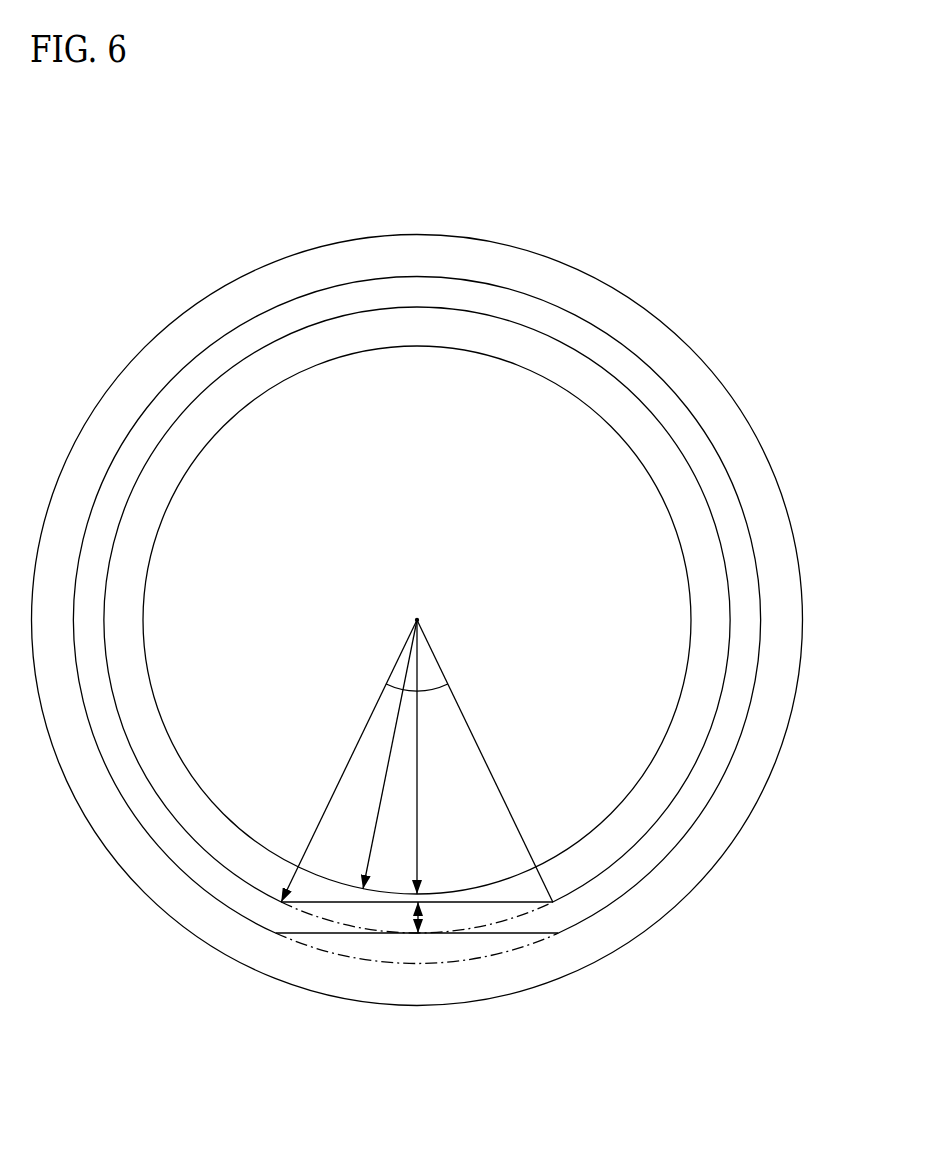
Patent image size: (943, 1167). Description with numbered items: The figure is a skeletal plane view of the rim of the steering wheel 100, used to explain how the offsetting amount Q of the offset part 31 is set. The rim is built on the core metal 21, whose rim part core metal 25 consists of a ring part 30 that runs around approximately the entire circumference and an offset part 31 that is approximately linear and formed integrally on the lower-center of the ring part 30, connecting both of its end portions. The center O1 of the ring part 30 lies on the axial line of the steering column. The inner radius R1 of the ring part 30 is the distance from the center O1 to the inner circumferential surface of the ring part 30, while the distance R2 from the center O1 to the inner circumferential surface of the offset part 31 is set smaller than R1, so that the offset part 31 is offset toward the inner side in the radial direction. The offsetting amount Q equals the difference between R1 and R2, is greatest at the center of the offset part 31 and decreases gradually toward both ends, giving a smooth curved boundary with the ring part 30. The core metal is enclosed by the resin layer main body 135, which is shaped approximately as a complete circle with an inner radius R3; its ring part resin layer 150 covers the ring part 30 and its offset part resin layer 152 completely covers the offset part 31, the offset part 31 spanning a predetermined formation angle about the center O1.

The steering wheel 100 is at (707, 265).
The resin layer main body 135 is at (685, 363).
The ring part resin layer 150 is at (430, 428).
The offset part resin layer 152 is at (417, 844).
The rim part core metal 25 is at (552, 298).
The core metal 21 is at (416, 581).
The ring part 30 is at (162, 828).
The offset part 31 is at (463, 920).
The center of the ring part O1 is at (417, 620).
The inner radius of the ring part R1 is at (340, 782).
The inner radius of the offset part R2 is at (420, 795).
The inner radius of the resin layer main body R3 is at (373, 832).
The offsetting amount Q is at (421, 921).